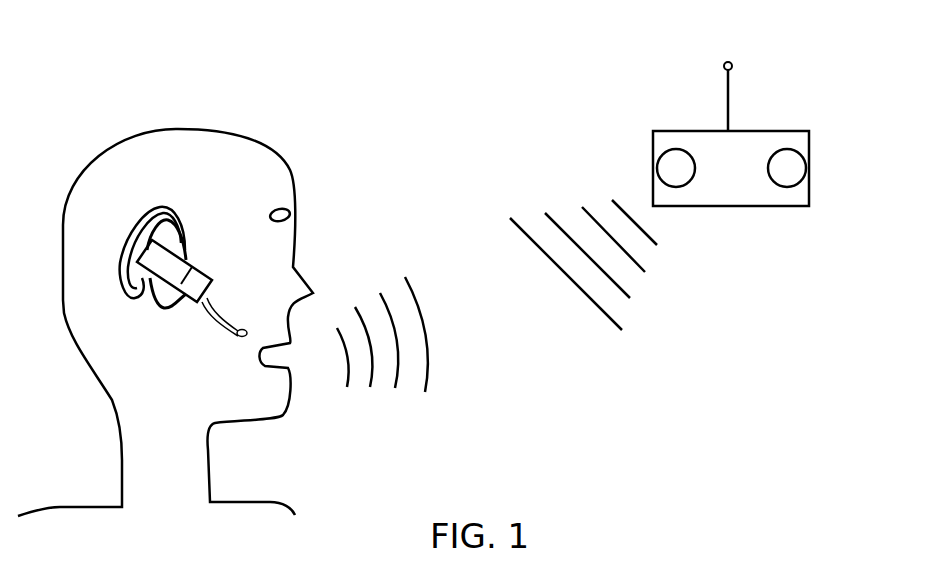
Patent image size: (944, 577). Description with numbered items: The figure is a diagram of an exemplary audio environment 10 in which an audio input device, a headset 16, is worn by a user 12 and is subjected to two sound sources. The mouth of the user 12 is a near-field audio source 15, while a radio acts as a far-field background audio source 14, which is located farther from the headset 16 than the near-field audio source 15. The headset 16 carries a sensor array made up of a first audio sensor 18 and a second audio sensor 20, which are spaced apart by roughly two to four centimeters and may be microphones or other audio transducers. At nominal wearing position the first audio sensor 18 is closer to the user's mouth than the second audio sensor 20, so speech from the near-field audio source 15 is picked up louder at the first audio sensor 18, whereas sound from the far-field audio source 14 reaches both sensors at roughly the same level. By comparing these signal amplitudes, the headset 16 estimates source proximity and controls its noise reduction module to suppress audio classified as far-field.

The audio environment 10 is at (483, 68).
The user 12 is at (186, 128).
The far-field background audio source 14 is at (768, 131).
The near-field audio source 15 is at (302, 358).
The headset 16 is at (190, 258).
The first audio sensor 18 is at (167, 300).
The second audio sensor 20 is at (240, 340).